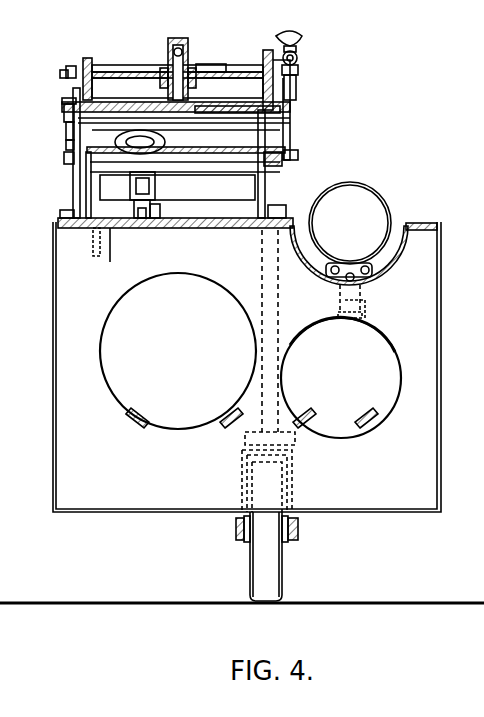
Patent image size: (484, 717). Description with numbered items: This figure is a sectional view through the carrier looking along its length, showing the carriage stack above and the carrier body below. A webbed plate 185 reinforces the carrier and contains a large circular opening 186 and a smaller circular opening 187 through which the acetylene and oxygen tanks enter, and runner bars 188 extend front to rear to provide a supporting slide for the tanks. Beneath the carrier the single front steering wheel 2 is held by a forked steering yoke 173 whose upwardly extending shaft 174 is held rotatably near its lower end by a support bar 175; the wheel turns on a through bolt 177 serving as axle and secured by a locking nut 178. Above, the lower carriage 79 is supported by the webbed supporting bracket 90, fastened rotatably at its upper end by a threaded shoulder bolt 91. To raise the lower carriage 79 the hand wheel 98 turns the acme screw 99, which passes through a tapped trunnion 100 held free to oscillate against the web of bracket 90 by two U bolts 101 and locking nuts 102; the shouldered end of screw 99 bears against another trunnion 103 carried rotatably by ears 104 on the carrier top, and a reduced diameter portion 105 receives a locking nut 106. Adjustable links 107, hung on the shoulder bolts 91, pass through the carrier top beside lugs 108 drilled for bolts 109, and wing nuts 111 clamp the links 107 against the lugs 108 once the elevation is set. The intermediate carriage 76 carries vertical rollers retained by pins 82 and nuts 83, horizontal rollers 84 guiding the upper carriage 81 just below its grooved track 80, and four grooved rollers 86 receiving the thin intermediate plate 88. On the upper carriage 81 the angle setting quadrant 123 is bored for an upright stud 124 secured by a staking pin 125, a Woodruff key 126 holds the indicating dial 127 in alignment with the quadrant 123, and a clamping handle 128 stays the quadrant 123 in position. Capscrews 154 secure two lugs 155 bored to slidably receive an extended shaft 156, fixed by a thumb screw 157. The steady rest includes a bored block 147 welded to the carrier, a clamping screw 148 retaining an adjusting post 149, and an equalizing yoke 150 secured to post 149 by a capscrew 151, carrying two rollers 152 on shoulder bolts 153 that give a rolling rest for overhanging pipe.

The wheel 2 is at (282, 576).
The intermediate carriage 76 is at (66, 132).
The lower carriage 79 is at (198, 147).
The grooved track 80 is at (94, 66).
The upper carriage 81 is at (86, 60).
The pin 82 is at (64, 76).
The nut 83 is at (68, 66).
The roller 84 is at (66, 101).
The grooved roller 86 is at (66, 112).
The intermediate plate 88 is at (106, 100).
The webbed supporting bracket 90 is at (262, 185).
The threaded shoulder bolt 91 is at (290, 160).
The hand wheel 98 is at (120, 140).
The acme screw 99 is at (155, 148).
The tapped trunnion 100 is at (190, 194).
The U bolt 101 is at (130, 194).
The locking nut 102 is at (150, 182).
The trunnion 103 is at (195, 228).
The ear 104 is at (132, 218).
The reduced diameter portion 105 is at (156, 218).
The locking nut 106 is at (143, 228).
The adjustable link 107 is at (93, 242).
The lug 108 is at (100, 228).
The bolt 109 is at (110, 262).
The wing nut 111 is at (80, 208).
The angle setting quadrant 123 is at (226, 98).
The upright stud 124 is at (194, 66).
The staking pin 125 is at (162, 70).
The Woodruff key 126 is at (220, 64).
The indicating dial 127 is at (170, 45).
The clamping handle 128 is at (186, 40).
The bored block 147 is at (358, 314).
The clamping screw 148 is at (358, 296).
The adjusting post 149 is at (338, 316).
The equalizing yoke 150 is at (362, 282).
The capscrew 151 is at (338, 282).
The roller 152 is at (372, 266).
The shoulder bolt 153 is at (375, 278).
The capscrew 154 is at (266, 52).
The lug 155 is at (297, 56).
The extended shaft 156 is at (298, 70).
The thumb screw 157 is at (296, 46).
The steering yoke 173 is at (295, 476).
The shaft 174 is at (252, 300).
The support bar 175 is at (245, 440).
The through bolt 177 is at (236, 536).
The locking nut 178 is at (298, 536).
The webbed plate 185 is at (57, 362).
The large circular opening 186 is at (110, 314).
The smaller circular opening 187 is at (282, 366).
The runner bar 188 is at (197, 430).